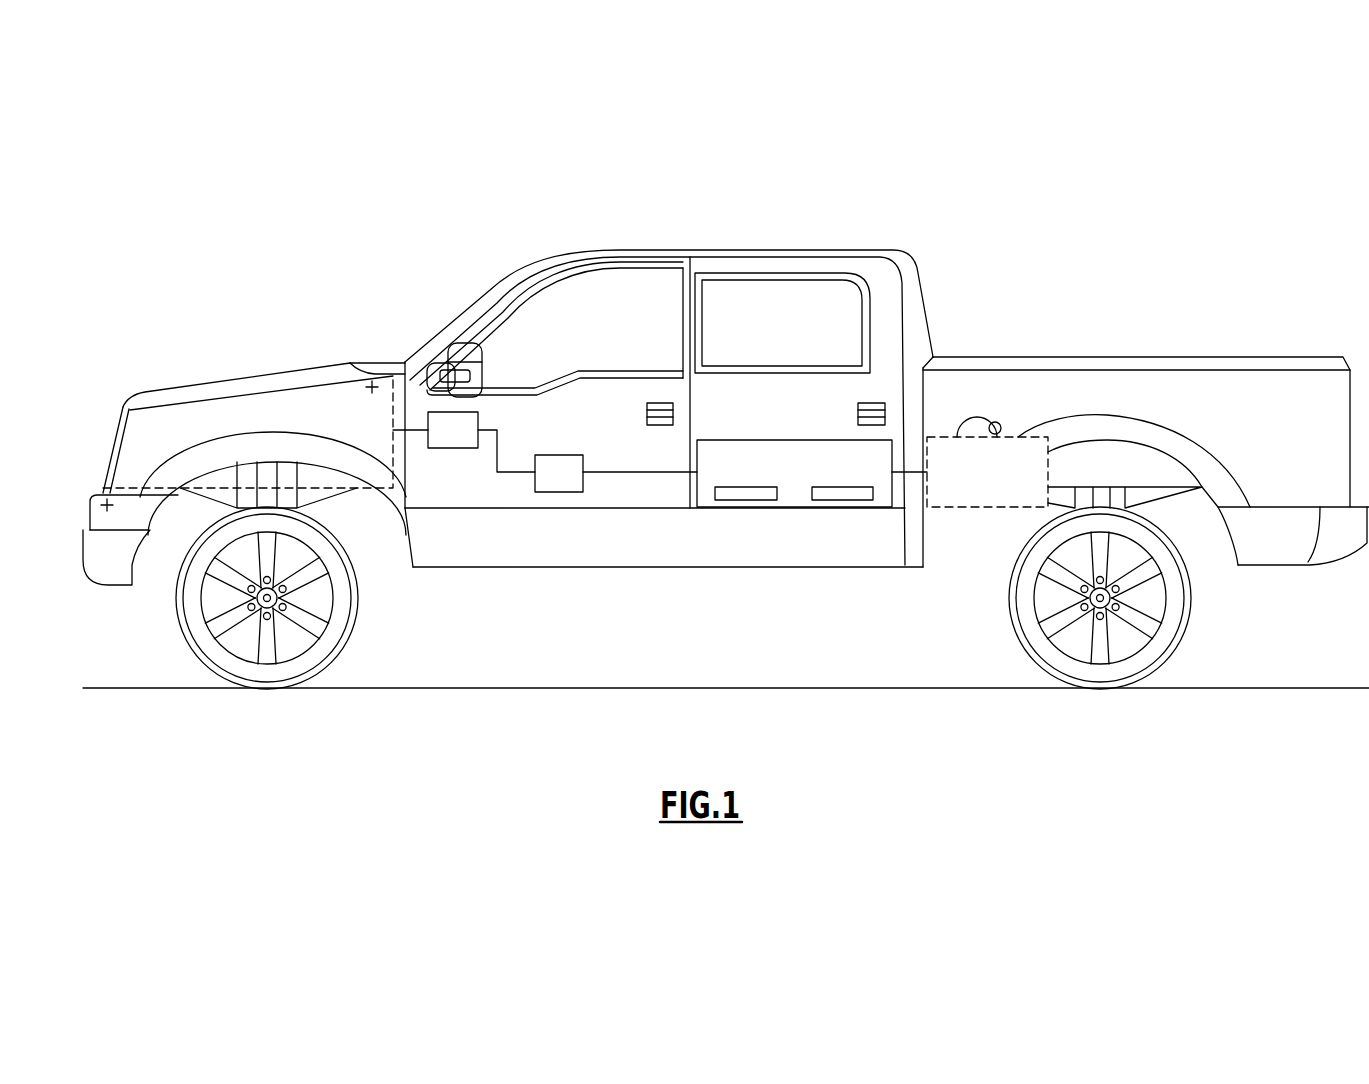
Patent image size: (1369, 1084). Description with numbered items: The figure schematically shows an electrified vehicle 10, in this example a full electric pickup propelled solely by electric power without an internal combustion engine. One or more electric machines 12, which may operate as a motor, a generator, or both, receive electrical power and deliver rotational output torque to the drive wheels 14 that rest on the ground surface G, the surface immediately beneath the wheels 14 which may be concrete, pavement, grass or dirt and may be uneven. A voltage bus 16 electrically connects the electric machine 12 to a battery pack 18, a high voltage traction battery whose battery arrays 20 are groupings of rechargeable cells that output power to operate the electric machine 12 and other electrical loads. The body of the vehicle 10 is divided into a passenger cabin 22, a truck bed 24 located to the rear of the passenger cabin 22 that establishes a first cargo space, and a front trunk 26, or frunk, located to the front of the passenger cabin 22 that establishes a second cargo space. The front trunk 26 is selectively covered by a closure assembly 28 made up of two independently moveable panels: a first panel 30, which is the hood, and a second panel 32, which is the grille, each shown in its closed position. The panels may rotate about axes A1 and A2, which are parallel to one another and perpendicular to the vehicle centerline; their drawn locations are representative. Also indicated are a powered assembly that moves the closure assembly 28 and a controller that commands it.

The electrified vehicle 10 is at (741, 228).
The electric machine 12 is at (1000, 435).
The drive wheels 14 is at (254, 672).
The voltage bus 16 is at (913, 482).
The battery pack 18 is at (788, 440).
The battery arrays 20 is at (828, 500).
The passenger cabin 22 is at (585, 278).
The truck bed 24 is at (1117, 337).
The front trunk 26 is at (378, 432).
The closure assembly 28 is at (207, 345).
The first panel 30 is at (279, 360).
The second panel 32 is at (82, 468).
The axis A1 is at (372, 390).
The axis A2 is at (104, 506).
The ground surface G is at (455, 688).